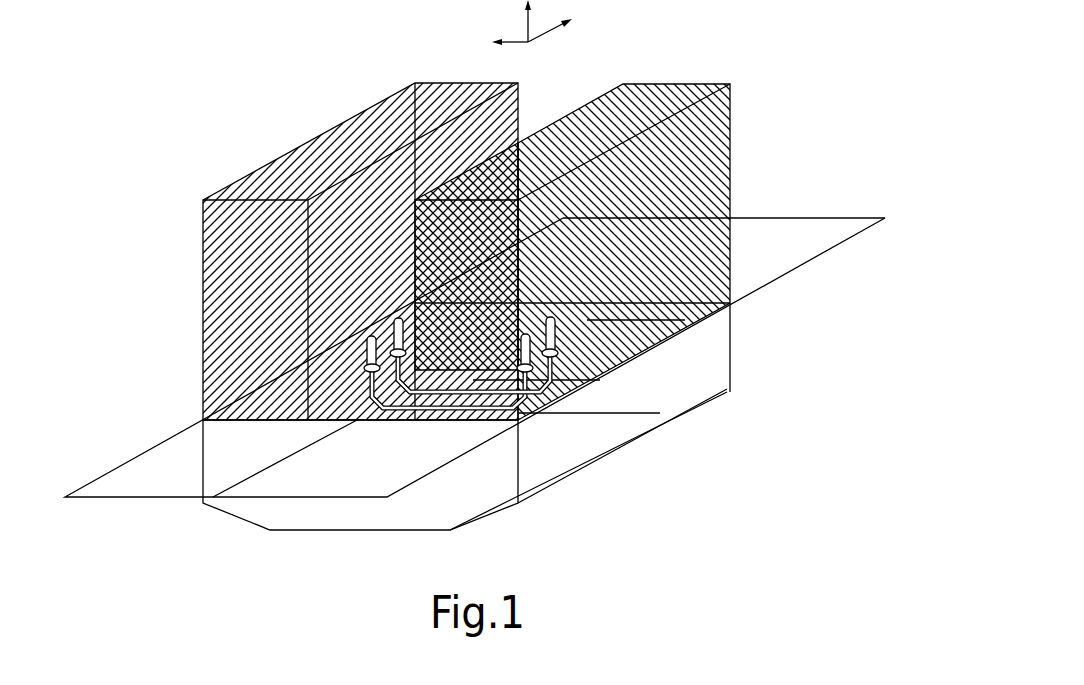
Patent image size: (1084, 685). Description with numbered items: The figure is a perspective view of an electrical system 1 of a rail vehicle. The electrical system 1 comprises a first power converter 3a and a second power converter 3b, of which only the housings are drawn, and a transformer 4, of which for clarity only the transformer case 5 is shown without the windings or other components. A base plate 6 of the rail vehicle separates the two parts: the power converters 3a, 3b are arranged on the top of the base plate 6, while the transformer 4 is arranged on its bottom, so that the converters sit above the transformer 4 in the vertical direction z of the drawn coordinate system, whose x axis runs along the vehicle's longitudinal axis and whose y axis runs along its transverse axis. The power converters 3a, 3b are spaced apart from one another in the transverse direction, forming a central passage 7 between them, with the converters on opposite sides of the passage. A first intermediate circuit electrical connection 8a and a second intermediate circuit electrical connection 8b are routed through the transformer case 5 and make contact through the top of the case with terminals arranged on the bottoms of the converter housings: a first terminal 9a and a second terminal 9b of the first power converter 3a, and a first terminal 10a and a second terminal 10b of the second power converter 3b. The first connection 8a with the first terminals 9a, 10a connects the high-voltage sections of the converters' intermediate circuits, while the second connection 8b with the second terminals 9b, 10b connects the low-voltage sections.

The electrical system 1 is at (166, 523).
The first power converter 3a is at (283, 157).
The second power converter 3b is at (730, 84).
The transformer 4 is at (712, 345).
The transformer case 5 is at (732, 376).
The base plate 6 is at (760, 232).
The central passage 7 is at (550, 107).
The first intermediate circuit electrical connection 8a is at (375, 405).
The second intermediate circuit electrical connection 8b is at (396, 393).
The first terminal of the first power converter 9a is at (368, 352).
The second terminal of the first power converter 9b is at (393, 330).
The first terminal of the second power converter 10a is at (540, 390).
The second terminal of the second power converter 10b is at (605, 378).